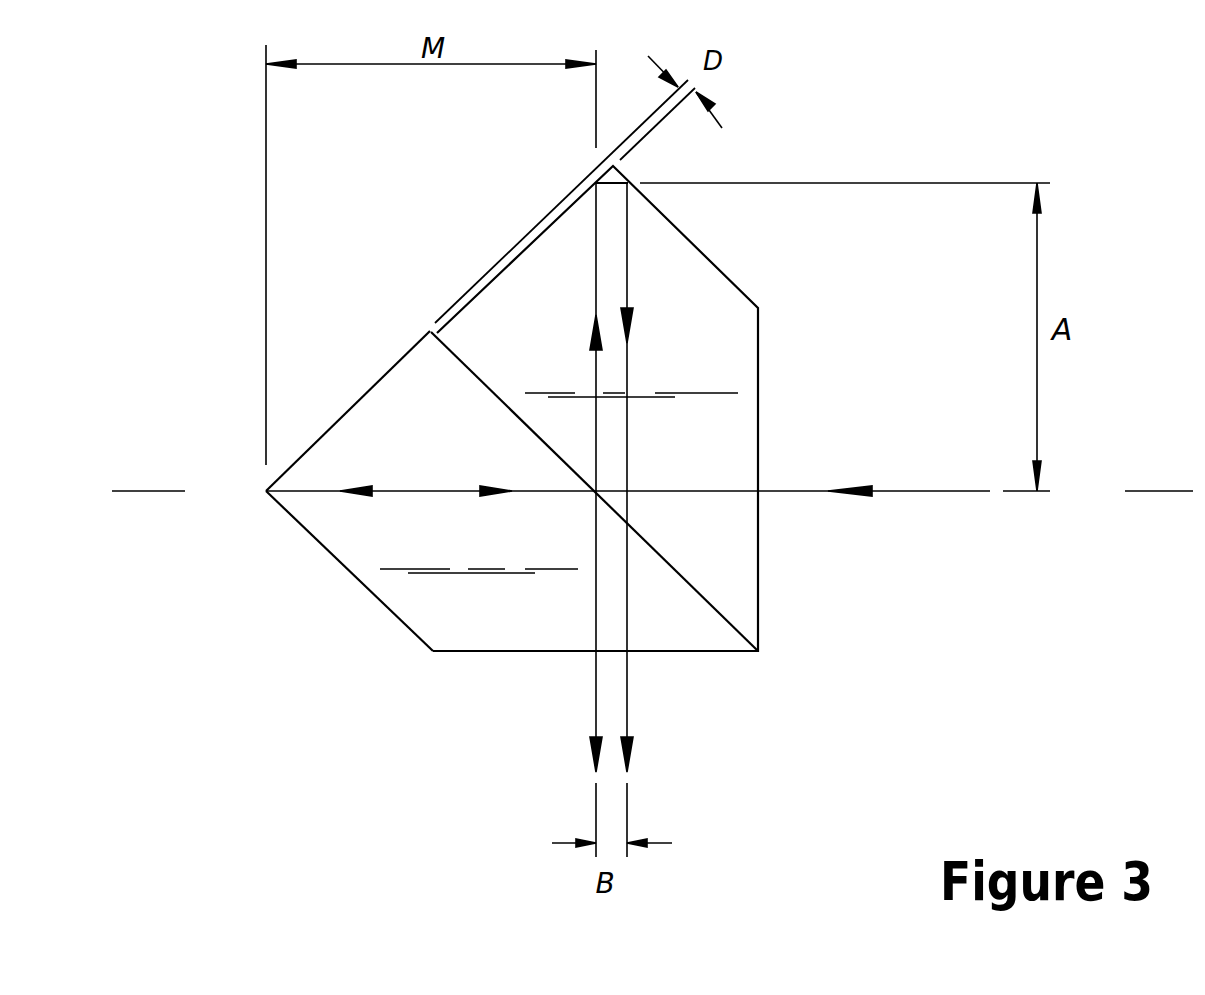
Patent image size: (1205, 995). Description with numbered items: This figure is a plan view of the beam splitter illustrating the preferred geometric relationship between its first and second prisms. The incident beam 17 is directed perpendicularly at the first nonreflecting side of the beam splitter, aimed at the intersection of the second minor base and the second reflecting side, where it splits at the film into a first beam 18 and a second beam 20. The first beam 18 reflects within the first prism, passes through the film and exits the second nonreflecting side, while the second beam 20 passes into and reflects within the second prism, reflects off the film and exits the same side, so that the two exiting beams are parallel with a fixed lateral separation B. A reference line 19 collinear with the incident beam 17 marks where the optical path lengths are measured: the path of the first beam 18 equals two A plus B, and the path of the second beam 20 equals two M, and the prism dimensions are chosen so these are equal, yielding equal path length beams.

The incident beam 17 is at (932, 491).
The first beam 18 is at (628, 707).
The reference line 19 is at (160, 491).
The second beam 20 is at (596, 707).